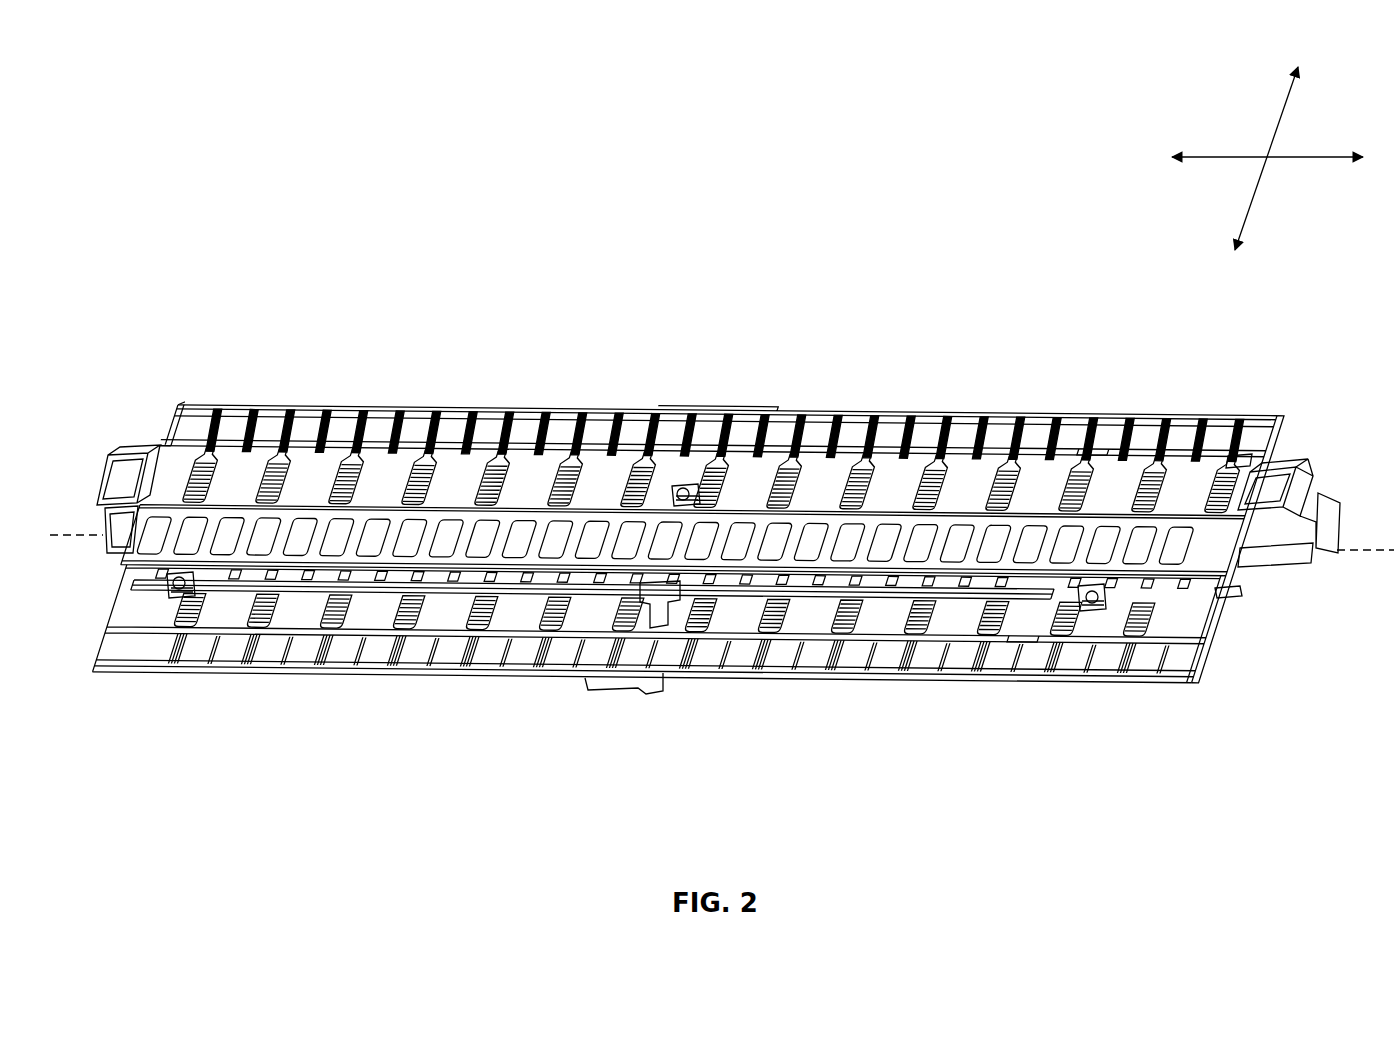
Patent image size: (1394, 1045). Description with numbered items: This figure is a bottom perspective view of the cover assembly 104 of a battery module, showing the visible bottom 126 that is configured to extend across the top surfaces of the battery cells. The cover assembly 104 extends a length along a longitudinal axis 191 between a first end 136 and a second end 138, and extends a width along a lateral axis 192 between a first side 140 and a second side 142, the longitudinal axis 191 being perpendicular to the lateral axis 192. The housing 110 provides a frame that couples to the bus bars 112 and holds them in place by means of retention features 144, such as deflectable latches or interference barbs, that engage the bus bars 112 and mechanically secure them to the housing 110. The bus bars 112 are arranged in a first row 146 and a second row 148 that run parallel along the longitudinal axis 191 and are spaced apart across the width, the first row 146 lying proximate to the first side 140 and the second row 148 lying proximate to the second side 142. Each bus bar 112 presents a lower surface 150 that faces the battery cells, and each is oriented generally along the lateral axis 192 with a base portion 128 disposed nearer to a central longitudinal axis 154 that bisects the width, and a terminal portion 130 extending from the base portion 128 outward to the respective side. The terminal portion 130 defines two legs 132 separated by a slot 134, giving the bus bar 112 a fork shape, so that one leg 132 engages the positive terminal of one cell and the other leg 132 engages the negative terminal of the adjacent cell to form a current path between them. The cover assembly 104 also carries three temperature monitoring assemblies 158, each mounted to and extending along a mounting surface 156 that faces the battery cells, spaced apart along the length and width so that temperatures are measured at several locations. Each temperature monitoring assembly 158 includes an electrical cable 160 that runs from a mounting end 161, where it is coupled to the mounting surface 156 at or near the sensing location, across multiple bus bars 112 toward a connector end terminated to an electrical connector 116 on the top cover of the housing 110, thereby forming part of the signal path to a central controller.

The cover assembly 104 is at (947, 243).
The housing 110 is at (1003, 520).
The bus bars 112 is at (1097, 473).
The electrical connector 116 is at (615, 685).
The bottom 126 is at (190, 423).
The base portion 128 is at (1097, 487).
The terminal portion 130 is at (1102, 430).
The legs 132 is at (1112, 443).
The slot 134 is at (1115, 428).
The first end 136 is at (143, 423).
The second end 138 is at (1287, 440).
The first side 140 is at (223, 675).
The second side 142 is at (268, 400).
The retention features 144 is at (1223, 593).
The first row 146 is at (1213, 630).
The second row 148 is at (1240, 457).
The lower surface 150 is at (1202, 465).
The central longitudinal axis 154 is at (97, 533).
The mounting surface 156 is at (600, 495).
The temperature monitoring assembly 158 is at (685, 492).
The electrical cable 160 is at (720, 500).
The mounting end 161 is at (683, 488).
The longitudinal axis 191 is at (1242, 157).
The lateral axis 192 is at (1287, 108).